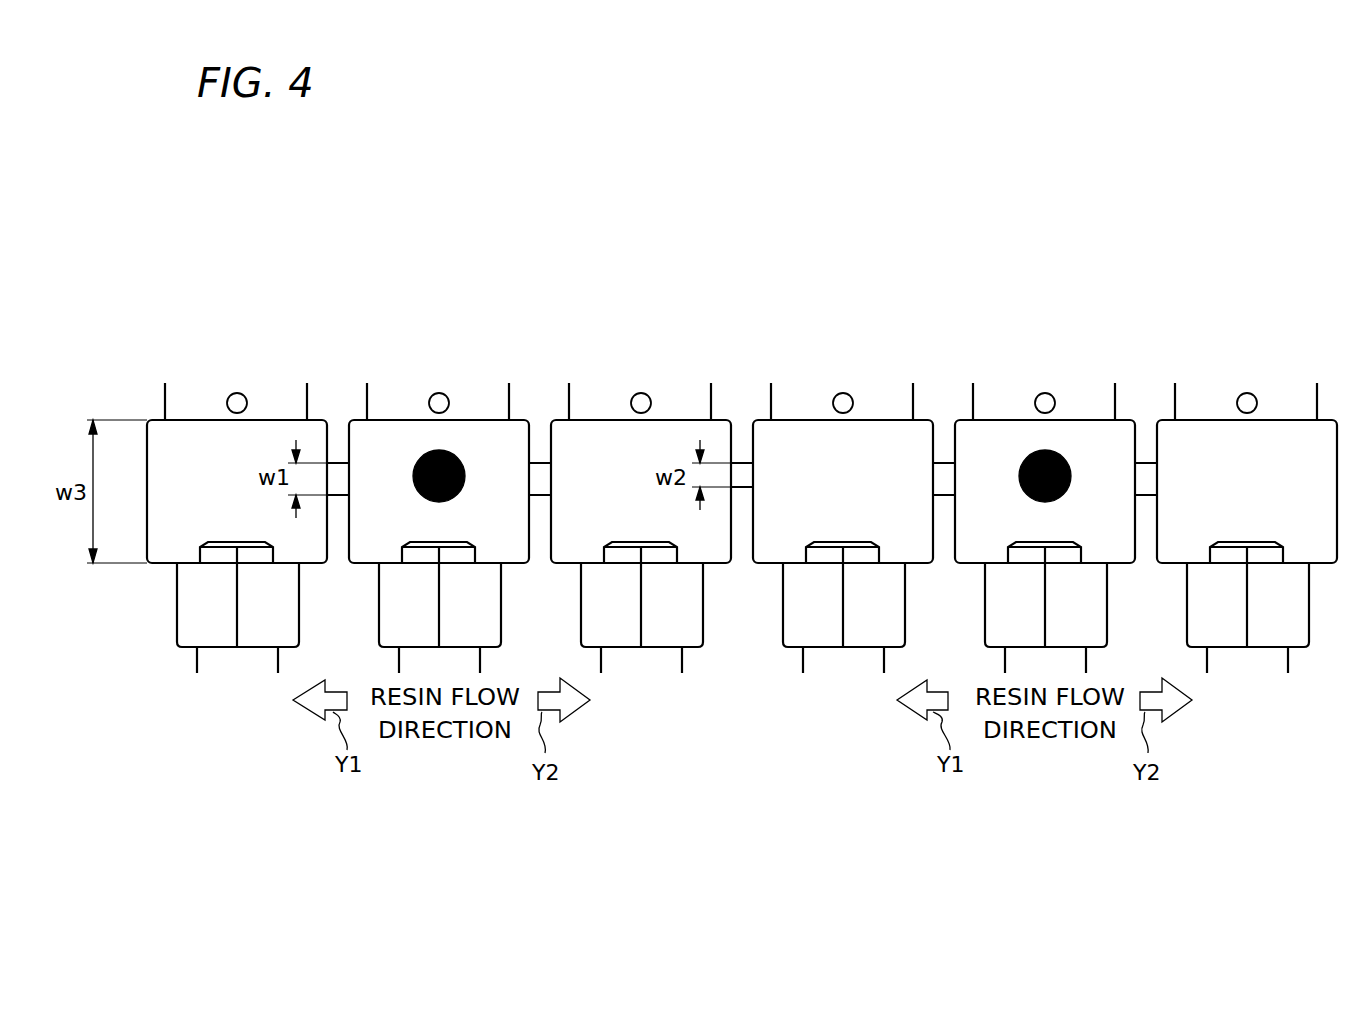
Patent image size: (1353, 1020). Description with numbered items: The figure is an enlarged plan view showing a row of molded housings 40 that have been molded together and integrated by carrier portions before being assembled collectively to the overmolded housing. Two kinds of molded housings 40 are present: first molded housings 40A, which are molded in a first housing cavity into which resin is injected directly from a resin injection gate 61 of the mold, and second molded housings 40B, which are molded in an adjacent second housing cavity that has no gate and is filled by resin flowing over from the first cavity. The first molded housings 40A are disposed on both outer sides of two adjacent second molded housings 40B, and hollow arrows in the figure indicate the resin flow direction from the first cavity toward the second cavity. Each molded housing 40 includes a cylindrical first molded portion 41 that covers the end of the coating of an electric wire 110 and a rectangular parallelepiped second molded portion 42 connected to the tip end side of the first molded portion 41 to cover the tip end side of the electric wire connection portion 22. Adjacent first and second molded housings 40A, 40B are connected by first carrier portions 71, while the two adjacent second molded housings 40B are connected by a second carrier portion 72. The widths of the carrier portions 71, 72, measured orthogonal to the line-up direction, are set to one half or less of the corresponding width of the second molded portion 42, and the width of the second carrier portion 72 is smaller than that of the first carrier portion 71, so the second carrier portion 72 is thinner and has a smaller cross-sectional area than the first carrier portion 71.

The electric wire connection portion 22 is at (302, 402).
The molded housing 40 is at (730, 429).
The first molded housing 40A is at (467, 417).
The second molded housing 40B is at (730, 429).
The first molded portion 41 is at (190, 606).
The second molded portion 42 is at (162, 452).
The resin injection gate 61 is at (419, 457).
The first carrier portion 71 is at (338, 463).
The second carrier portion 72 is at (742, 463).
The electric wire 110 is at (205, 655).